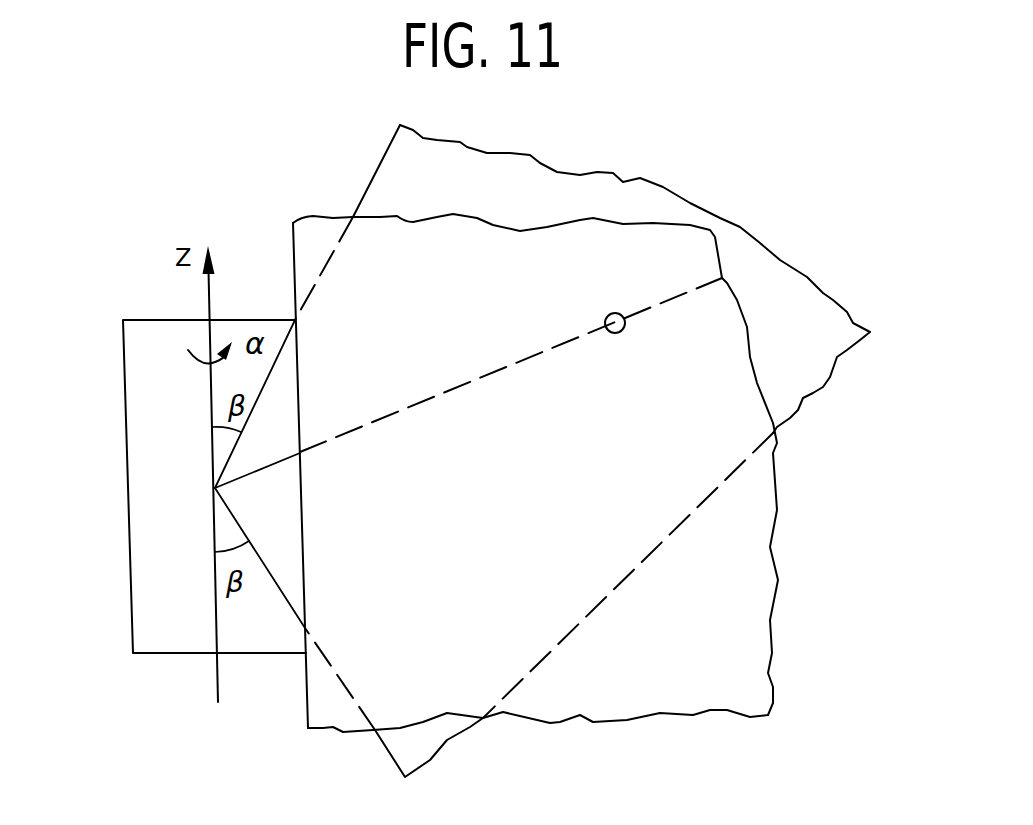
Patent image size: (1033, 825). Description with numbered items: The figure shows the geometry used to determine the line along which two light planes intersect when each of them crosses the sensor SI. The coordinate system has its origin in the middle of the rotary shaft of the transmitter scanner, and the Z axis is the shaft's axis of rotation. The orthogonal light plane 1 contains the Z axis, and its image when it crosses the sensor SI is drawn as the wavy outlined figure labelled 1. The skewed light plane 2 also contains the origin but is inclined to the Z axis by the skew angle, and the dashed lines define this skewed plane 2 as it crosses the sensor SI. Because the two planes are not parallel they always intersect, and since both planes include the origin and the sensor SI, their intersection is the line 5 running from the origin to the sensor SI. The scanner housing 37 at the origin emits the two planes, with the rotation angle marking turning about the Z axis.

The orthogonal light plane 1 is at (535, 473).
The skewed light plane 2 is at (582, 451).
The intersection line 5 is at (511, 357).
The optical head 37 is at (173, 501).
The sensor SI is at (609, 307).